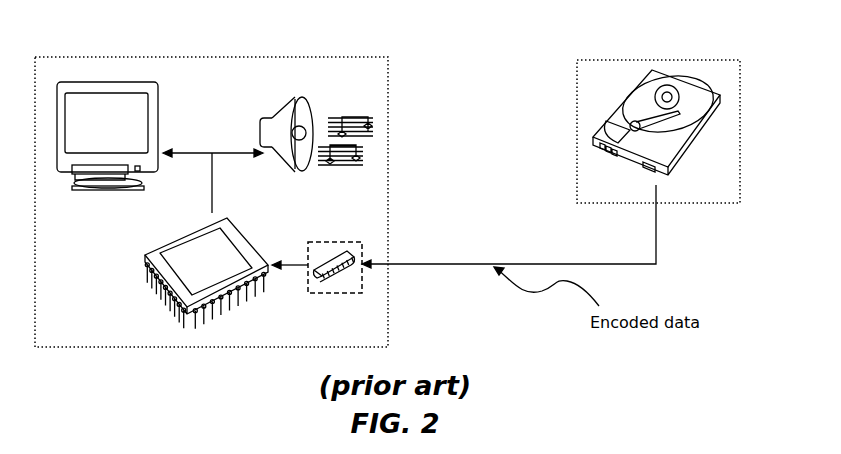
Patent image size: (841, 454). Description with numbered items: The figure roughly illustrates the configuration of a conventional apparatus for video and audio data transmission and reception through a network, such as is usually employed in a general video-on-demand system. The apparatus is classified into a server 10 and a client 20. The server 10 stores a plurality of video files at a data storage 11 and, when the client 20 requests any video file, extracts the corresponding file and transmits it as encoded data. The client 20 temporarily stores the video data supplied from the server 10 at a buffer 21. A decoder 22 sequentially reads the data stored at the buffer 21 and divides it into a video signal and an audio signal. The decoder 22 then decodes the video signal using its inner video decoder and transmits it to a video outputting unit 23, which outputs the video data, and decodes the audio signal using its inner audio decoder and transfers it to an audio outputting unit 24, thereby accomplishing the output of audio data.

The server 10 is at (707, 58).
The data storage 11 is at (612, 107).
The client 20 is at (318, 57).
The buffer 21 is at (333, 241).
The decoder 22 is at (248, 245).
The video outputting unit 23 is at (158, 98).
The audio outputting unit 24 is at (312, 100).